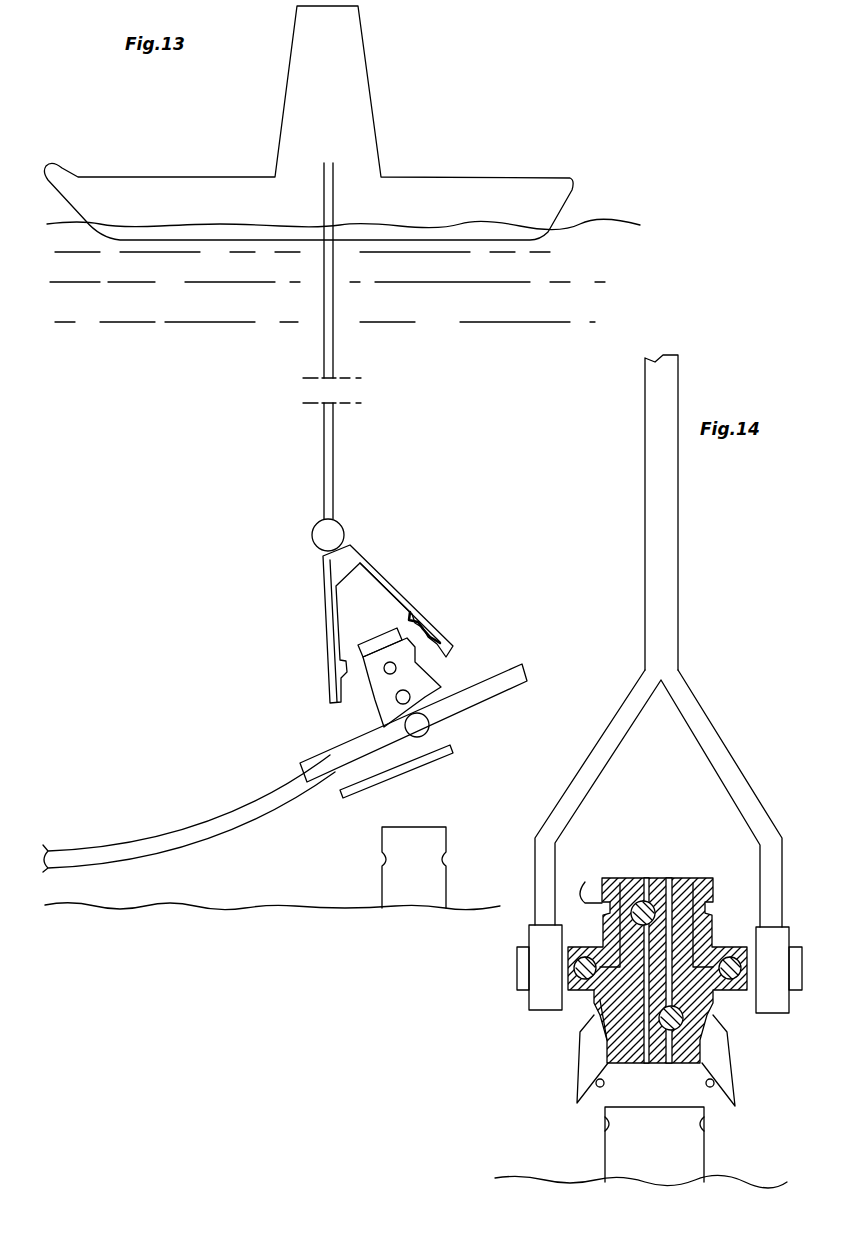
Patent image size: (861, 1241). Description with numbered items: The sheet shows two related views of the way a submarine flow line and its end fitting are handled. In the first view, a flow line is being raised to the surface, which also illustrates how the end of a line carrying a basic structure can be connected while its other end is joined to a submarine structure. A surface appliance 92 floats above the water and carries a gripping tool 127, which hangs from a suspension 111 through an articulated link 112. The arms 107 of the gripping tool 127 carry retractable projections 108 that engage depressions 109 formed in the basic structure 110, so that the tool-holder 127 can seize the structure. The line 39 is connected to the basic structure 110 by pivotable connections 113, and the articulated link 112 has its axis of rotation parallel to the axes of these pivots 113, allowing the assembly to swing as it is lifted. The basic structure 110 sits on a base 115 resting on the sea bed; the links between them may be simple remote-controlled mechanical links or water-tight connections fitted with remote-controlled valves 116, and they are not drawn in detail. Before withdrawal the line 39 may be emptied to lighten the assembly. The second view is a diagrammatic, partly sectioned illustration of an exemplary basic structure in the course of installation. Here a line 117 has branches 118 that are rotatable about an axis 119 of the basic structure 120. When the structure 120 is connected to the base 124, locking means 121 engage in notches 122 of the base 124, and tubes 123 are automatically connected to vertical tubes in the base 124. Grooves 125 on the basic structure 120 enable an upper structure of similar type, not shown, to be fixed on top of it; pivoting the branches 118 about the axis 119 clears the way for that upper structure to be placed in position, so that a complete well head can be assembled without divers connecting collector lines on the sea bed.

In FIG. 13, the surface appliance 92 is at (501, 165).
In FIG. 13, the suspension 111 is at (330, 338).
In FIG. 13, the articulated link 112 is at (336, 526).
In FIG. 13, the arms 107 is at (358, 566).
In FIG. 13, the retractable projections 108 is at (420, 633).
In FIG. 13, the depressions 109 is at (347, 656).
In FIG. 13, the remote-controlled valves 116 is at (397, 698).
In FIG. 13, the gripping tool 127 is at (300, 620).
In FIG. 13, the basic structure 110 is at (512, 676).
In FIG. 13, the pivotable connections 113 is at (426, 731).
In FIG. 13, the line 39 is at (136, 828).
In FIG. 13, the base 115 is at (423, 834).
In FIG. 14, the line 117 is at (658, 534).
In FIG. 14, the branches 118 is at (720, 757).
In FIG. 14, the axis 119 is at (529, 967).
In FIG. 14, the basic structure 120 is at (660, 878).
In FIG. 14, the grooves 125 is at (583, 881).
In FIG. 14, the tubes 123 is at (646, 997).
In FIG. 14, the locking means 121 is at (610, 1083).
In FIG. 14, the notches 122 is at (603, 1122).
In FIG. 14, the base 124 is at (675, 1156).